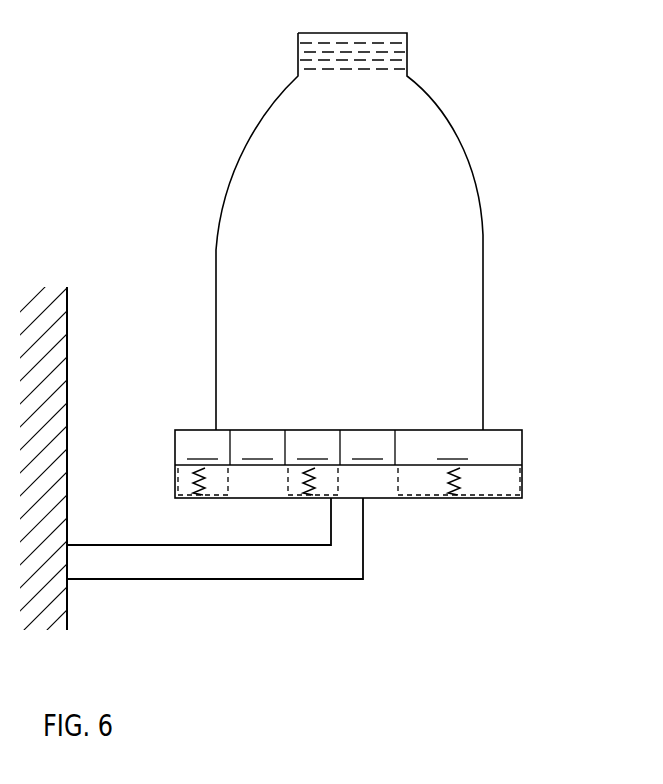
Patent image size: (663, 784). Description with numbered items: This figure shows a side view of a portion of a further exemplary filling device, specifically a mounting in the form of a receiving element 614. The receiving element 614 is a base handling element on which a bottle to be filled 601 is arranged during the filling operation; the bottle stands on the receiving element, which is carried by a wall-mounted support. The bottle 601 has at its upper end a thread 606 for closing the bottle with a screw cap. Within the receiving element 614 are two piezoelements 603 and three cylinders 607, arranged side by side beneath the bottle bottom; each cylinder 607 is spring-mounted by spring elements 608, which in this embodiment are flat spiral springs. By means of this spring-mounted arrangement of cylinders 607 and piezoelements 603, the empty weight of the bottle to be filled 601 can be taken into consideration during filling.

The bottle to be filled 601 is at (483, 202).
The thread 606 is at (298, 58).
The cylinders 607 is at (348, 447).
The piezoelements 603 is at (312, 447).
The spring elements 608 is at (190, 498).
The receiving element 614 is at (375, 540).